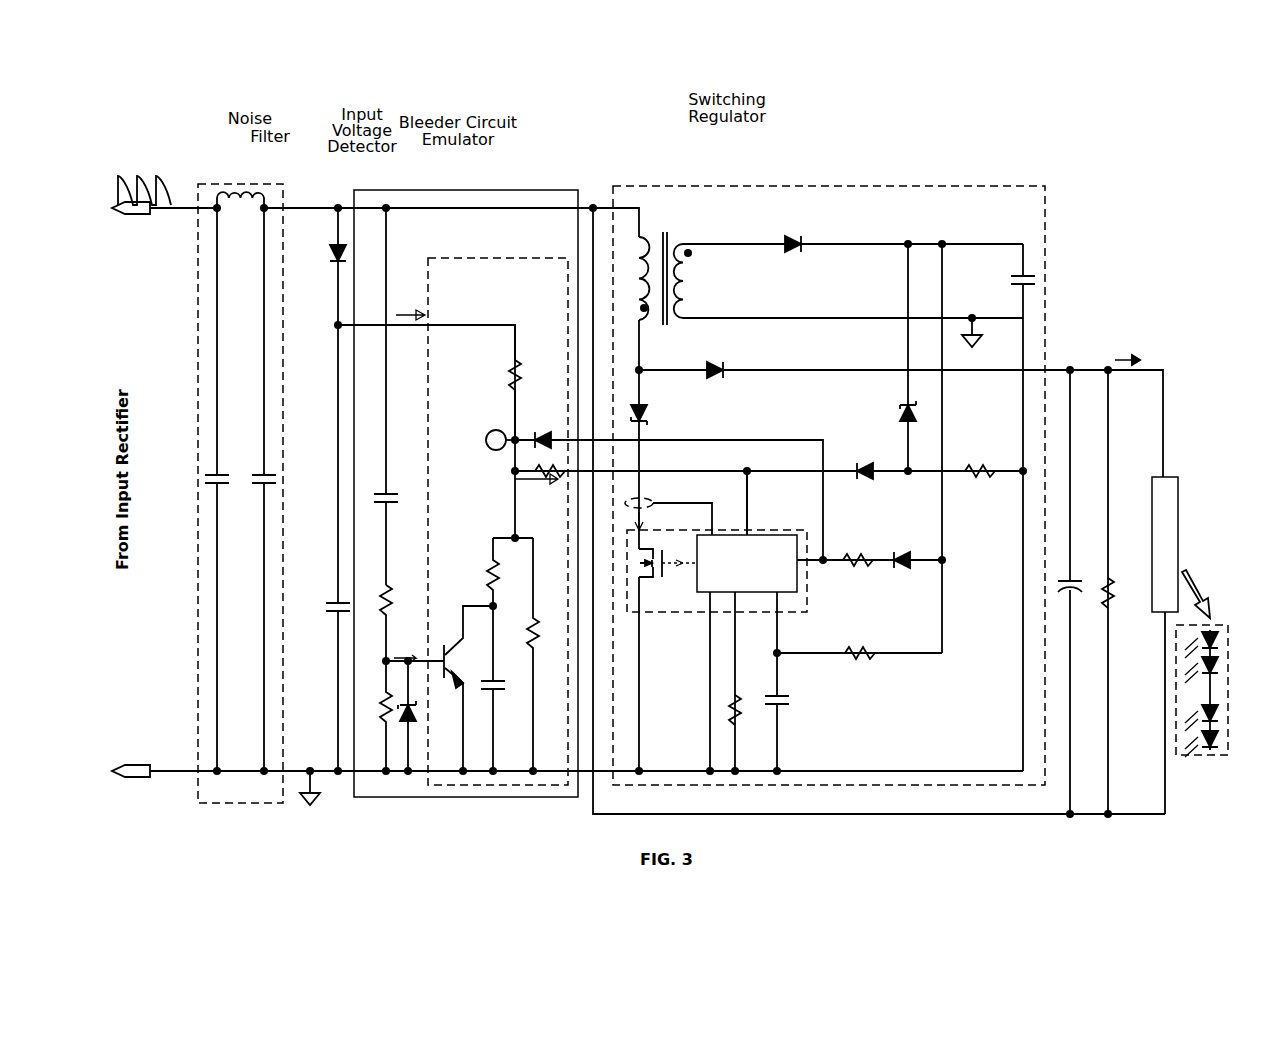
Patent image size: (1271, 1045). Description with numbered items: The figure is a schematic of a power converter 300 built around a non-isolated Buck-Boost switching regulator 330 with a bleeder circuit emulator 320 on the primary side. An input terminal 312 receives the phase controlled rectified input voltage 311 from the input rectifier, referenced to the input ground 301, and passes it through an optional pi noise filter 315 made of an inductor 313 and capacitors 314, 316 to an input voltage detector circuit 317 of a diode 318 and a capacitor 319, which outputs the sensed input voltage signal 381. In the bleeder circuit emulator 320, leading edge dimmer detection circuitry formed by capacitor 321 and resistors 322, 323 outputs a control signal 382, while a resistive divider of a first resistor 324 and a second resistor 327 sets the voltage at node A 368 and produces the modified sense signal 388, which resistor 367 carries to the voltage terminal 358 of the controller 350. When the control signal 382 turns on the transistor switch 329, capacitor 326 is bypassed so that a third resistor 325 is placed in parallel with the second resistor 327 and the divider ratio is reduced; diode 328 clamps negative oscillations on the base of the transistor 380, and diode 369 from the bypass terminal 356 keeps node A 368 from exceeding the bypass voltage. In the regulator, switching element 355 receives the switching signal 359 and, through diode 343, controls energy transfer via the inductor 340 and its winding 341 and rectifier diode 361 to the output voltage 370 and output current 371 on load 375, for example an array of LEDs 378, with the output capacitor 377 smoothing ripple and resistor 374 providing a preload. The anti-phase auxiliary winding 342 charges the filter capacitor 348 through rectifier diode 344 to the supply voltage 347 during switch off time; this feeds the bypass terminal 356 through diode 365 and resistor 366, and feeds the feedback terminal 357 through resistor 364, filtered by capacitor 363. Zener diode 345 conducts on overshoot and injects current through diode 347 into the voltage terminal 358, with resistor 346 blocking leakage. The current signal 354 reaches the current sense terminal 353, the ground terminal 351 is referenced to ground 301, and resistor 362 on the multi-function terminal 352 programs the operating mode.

The power converter 300 is at (1099, 104).
The input ground 301 is at (330, 795).
The rectified input voltage 311 is at (140, 172).
The input terminal 312 is at (158, 212).
The inductor 313 is at (235, 220).
The capacitor 314 is at (272, 468).
The noise filter 315 is at (228, 190).
The capacitor 316 is at (208, 466).
The input voltage detector circuit 317 is at (354, 186).
The diode 318 is at (330, 258).
The capacitor 319 is at (330, 600).
The bleeder circuit emulator 320 is at (538, 254).
The capacitor 321 is at (380, 494).
The resistor 322 is at (382, 583).
The resistor 323 is at (378, 700).
The resistor R1 324 is at (533, 380).
The resistor R3 325 is at (485, 562).
The capacitor 326 is at (487, 682).
The resistor R2 327 is at (538, 630).
The diode 328 is at (420, 712).
The transistor switch Q1 329 is at (460, 622).
The switching regulator 330 is at (692, 185).
The inductor L1 340 is at (671, 261).
The inductor winding L1 341 is at (640, 288).
The auxiliary winding 342 is at (685, 270).
The diode 343 is at (650, 413).
The rectifier diode 344 is at (802, 238).
The Zener diode 345 is at (898, 420).
The resistor 346 is at (980, 464).
The voltage V1 / diode 347 is at (978, 232).
The capacitor C1 348 is at (1036, 280).
The controller 350 is at (773, 535).
The ground terminal G 351 is at (712, 620).
The multi-function terminal R 352 is at (742, 618).
The terminal Isns 353 is at (722, 500).
The current signal 354 is at (655, 490).
The switching element 355 is at (635, 592).
The bypass terminal BP 356 is at (818, 568).
The feedback terminal FB 357 is at (802, 605).
The terminal V 358 is at (758, 500).
The switching signal 359 is at (672, 575).
The rectifier diode 361 is at (730, 366).
The resistor 362 is at (745, 712).
The capacitor 363 is at (790, 708).
The resistor 364 is at (865, 660).
The diode 365 is at (902, 554).
The resistor 366 is at (850, 554).
The resistor 367 is at (535, 466).
The node A 368 is at (485, 440).
The diode 369 is at (550, 432).
The output voltage Vo 370 is at (1195, 360).
The output current Io 371 is at (1128, 354).
The resistor 374 is at (1118, 590).
The load 375 is at (1188, 515).
The capacitor Co 377 is at (1082, 582).
The array of LEDs 378 is at (1200, 760).
The transistor Q1 380 is at (593, 202).
The sensed input voltage signal UV_SENSE 381 is at (422, 310).
The control signal UCNTRL 382 is at (408, 641).
The modified input voltage sense signal UV_SENSE_MOD 388 is at (520, 490).